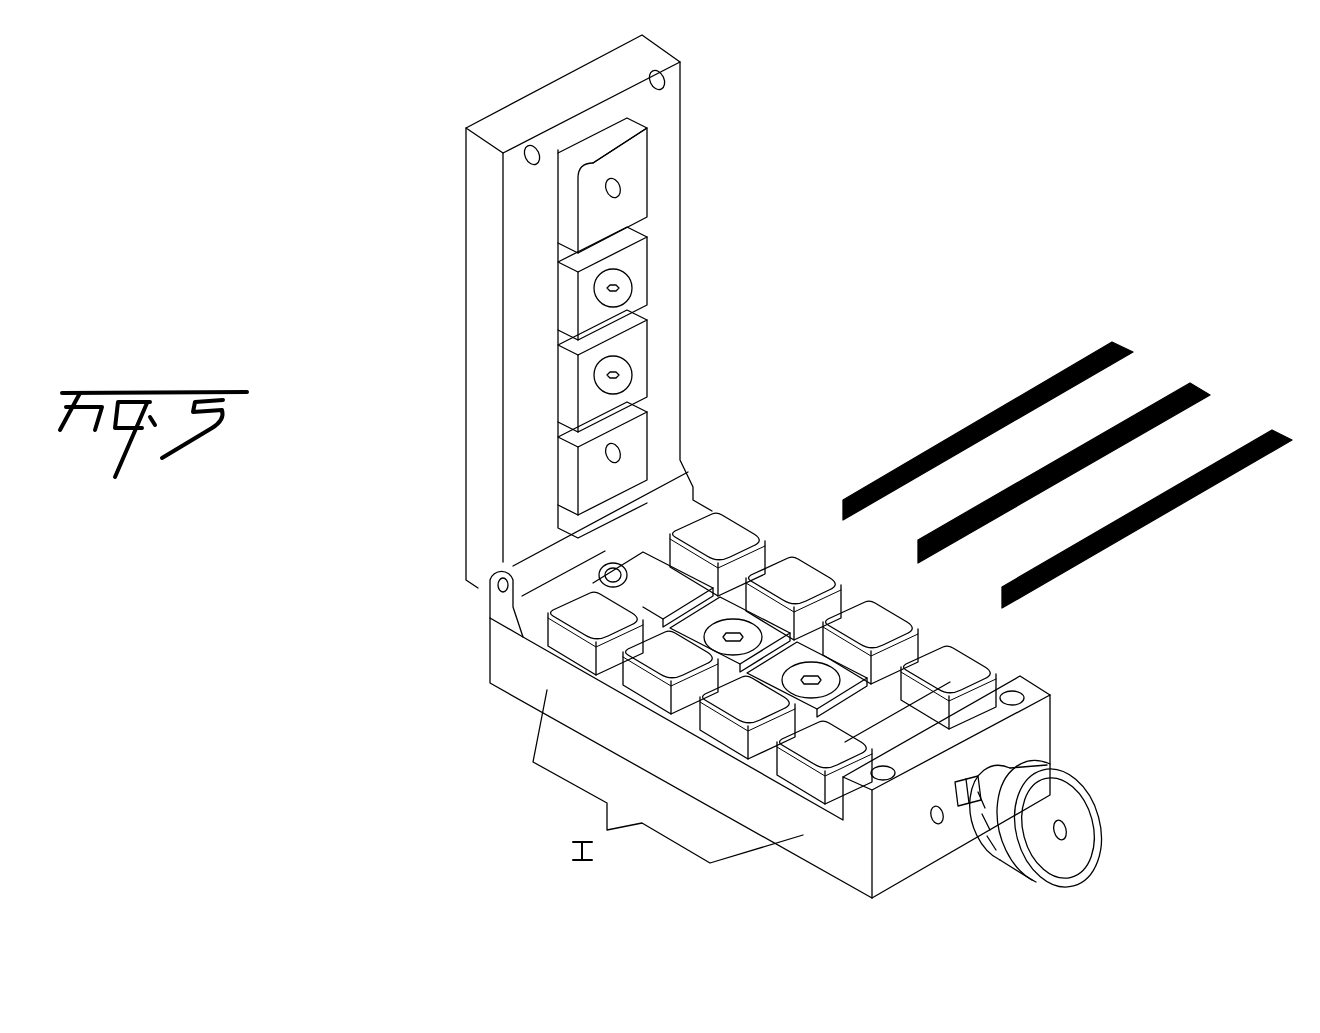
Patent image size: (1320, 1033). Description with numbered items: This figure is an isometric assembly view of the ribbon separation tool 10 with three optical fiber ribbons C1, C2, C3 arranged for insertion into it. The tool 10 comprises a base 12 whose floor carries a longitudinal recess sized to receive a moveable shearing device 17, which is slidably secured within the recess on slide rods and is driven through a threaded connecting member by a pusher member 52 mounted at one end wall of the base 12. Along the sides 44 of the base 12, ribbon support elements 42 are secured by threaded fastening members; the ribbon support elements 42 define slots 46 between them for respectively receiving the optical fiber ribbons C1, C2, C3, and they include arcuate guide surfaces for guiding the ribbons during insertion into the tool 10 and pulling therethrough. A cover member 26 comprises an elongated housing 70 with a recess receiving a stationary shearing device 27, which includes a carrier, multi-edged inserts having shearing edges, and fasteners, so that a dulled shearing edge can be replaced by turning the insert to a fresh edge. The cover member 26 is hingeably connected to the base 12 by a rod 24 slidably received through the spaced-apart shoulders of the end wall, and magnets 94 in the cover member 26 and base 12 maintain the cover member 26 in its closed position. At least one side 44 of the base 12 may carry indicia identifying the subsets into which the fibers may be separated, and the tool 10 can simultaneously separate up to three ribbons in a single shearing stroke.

The ribbon separation tool 10 is at (368, 171).
The base 12 is at (494, 698).
The moveable shearing device 17 is at (657, 596).
The rod 24 is at (493, 580).
The cover member 26 is at (531, 90).
The stationary shearing device 27 is at (634, 196).
The ribbon support elements 42 is at (722, 520).
The sides 44 is at (827, 840).
The slots 46 is at (768, 540).
The pusher member 52 is at (1083, 790).
The elongated housing 70 is at (683, 268).
The magnets 94 is at (665, 80).
The optical fiber ribbon C1 is at (1168, 512).
The optical fiber ribbon C2 is at (1137, 412).
The optical fiber ribbon C3 is at (1010, 400).